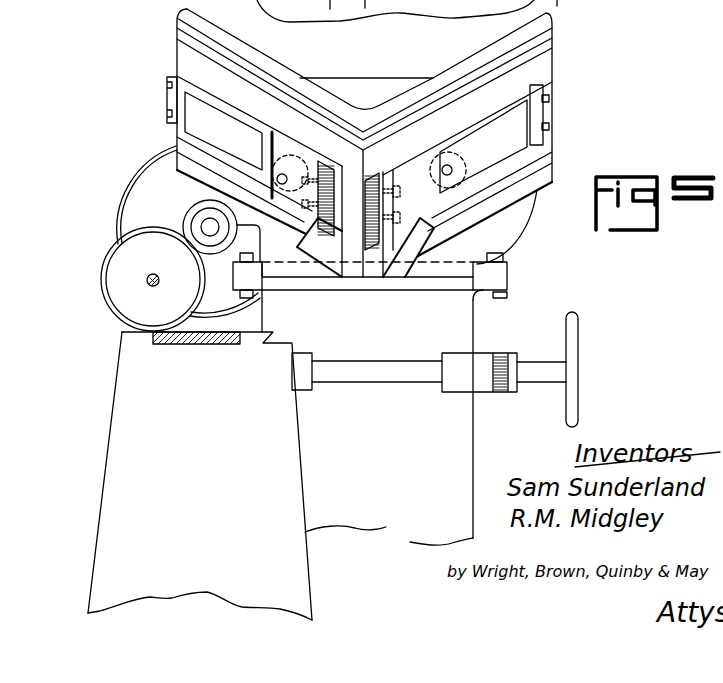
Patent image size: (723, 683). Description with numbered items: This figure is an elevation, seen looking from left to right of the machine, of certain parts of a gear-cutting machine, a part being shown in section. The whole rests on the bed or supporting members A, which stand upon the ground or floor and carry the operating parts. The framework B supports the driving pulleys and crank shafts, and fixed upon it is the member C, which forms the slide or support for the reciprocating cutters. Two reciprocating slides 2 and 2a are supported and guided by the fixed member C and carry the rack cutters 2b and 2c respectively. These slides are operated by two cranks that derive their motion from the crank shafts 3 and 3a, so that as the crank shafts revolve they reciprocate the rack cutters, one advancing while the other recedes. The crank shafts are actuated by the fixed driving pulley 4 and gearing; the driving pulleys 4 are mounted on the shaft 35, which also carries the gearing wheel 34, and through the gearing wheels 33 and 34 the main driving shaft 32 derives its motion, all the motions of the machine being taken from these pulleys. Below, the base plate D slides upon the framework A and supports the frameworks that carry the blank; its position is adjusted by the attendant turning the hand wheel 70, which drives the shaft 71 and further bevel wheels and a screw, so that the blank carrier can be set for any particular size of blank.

The reciprocating slide 2 is at (327, 177).
The reciprocating slide 2a is at (366, 186).
The rack cutter 2b is at (280, 157).
The rack cutter 2c is at (371, 213).
The crank shaft 3 is at (277, 157).
The crank shaft 3a is at (413, 170).
The driving pulley 4 is at (143, 163).
The main driving shaft 32 is at (149, 283).
The gearing wheel 33 is at (103, 260).
The gearing wheel 34 is at (202, 225).
The shaft 35 is at (207, 225).
The hand wheel 70 is at (577, 337).
The shaft 71 is at (378, 368).
The bed or supporting members A is at (135, 432).
The framework B is at (368, 87).
The fixed member C is at (195, 57).
The base plate D is at (453, 243).